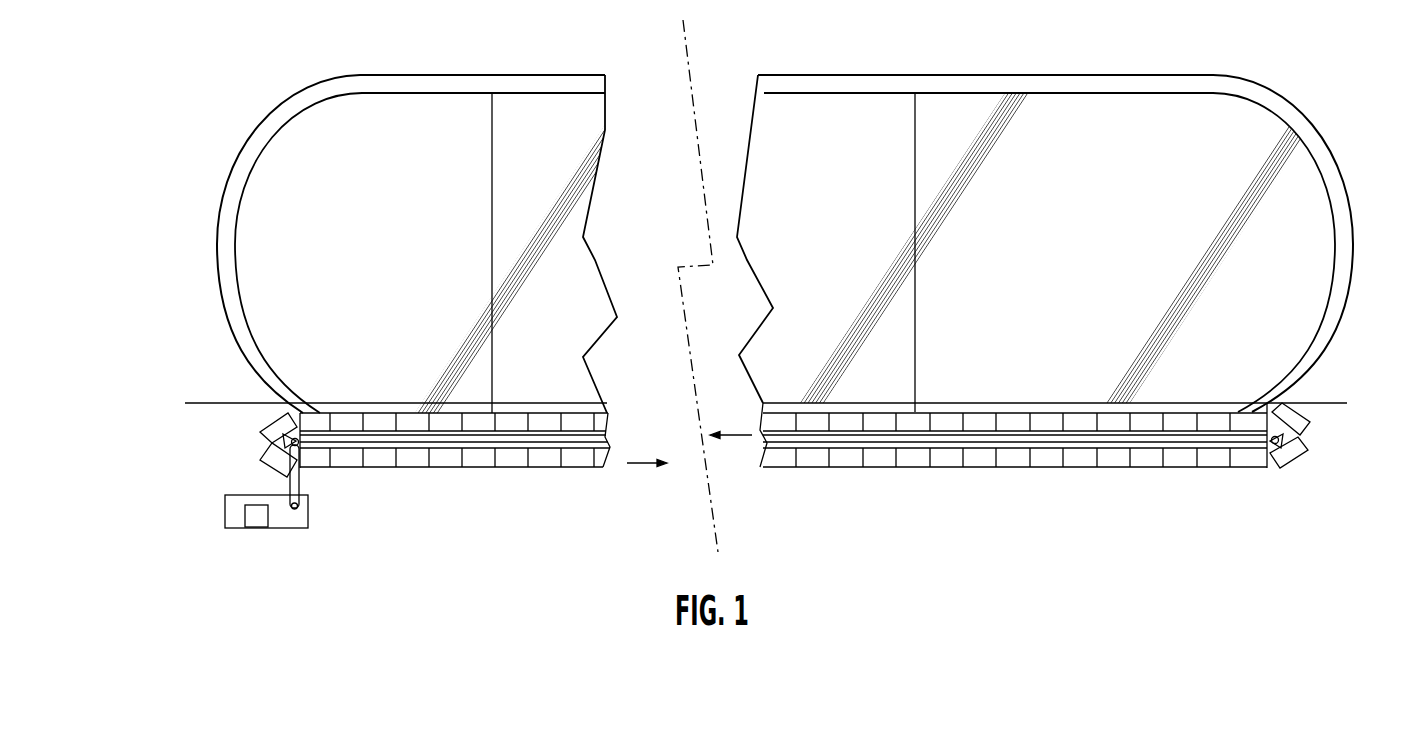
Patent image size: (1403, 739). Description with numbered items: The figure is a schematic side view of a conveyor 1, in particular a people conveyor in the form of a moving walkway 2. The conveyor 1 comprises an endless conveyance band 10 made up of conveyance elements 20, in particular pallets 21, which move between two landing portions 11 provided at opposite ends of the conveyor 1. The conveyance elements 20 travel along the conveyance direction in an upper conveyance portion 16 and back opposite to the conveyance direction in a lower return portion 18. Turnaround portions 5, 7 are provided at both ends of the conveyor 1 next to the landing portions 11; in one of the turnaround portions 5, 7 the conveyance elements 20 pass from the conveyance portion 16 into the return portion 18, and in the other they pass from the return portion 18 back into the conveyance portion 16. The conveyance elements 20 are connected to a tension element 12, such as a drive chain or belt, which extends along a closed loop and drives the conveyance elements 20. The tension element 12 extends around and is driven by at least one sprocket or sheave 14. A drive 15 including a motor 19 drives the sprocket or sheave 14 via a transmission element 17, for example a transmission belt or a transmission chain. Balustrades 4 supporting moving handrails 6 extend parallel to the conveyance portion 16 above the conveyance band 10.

The conveyor 1 is at (252, 90).
The moving walkway 2 is at (763, 234).
The balustrade 4 is at (518, 115).
The turnaround portion 5 is at (228, 457).
The moving handrail 6 is at (1225, 75).
The turnaround portion 7 is at (1338, 431).
The endless conveyance band 10 is at (958, 509).
The landing portion 11 is at (226, 378).
The tension element 12 is at (600, 440).
The sprocket or sheave 14 is at (268, 440).
The drive 15 is at (234, 541).
The conveyance portion 16 is at (1076, 398).
The transmission element 17 is at (312, 472).
The return portion 18 is at (1055, 534).
The motor 19 is at (257, 517).
The conveyance element 20 is at (417, 460).
The pallet 21 is at (454, 475).